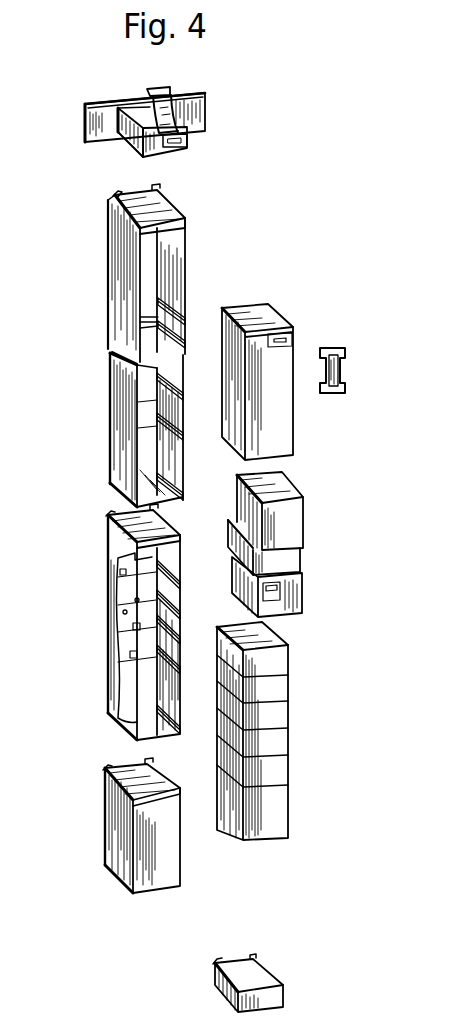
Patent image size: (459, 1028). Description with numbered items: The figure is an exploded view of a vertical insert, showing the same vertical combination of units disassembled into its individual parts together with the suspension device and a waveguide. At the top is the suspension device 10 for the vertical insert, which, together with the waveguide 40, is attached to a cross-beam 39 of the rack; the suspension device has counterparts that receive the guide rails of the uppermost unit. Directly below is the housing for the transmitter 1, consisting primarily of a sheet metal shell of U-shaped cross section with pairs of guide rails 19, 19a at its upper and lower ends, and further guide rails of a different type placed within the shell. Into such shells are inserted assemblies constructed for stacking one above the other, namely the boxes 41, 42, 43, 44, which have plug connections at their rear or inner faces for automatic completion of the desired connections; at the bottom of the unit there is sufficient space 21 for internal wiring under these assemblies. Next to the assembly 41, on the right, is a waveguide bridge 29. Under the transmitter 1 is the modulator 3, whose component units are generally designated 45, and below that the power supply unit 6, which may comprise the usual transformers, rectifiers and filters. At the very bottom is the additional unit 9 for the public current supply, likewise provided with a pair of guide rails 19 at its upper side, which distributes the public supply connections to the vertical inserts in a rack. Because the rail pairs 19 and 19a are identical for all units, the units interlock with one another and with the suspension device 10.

The transmitter unit 1 is at (130, 418).
The modulator unit 3 is at (145, 610).
The power supply unit 6 is at (112, 830).
The additional unit for public current supply 9 is at (215, 983).
The suspension device 10 is at (133, 136).
The guide rail pair 19 is at (188, 149).
The guide rail pair 19a is at (117, 200).
The space for internal wiring 21 is at (112, 352).
The waveguide bridge 29 is at (345, 372).
The cross-beam 39 is at (85, 121).
The waveguide 40 is at (162, 112).
The assembly 41 is at (263, 313).
The assembly 42 is at (285, 530).
The assembly 43 is at (278, 558).
The assembly 44 is at (293, 602).
The component units for the modulator 45 is at (273, 743).